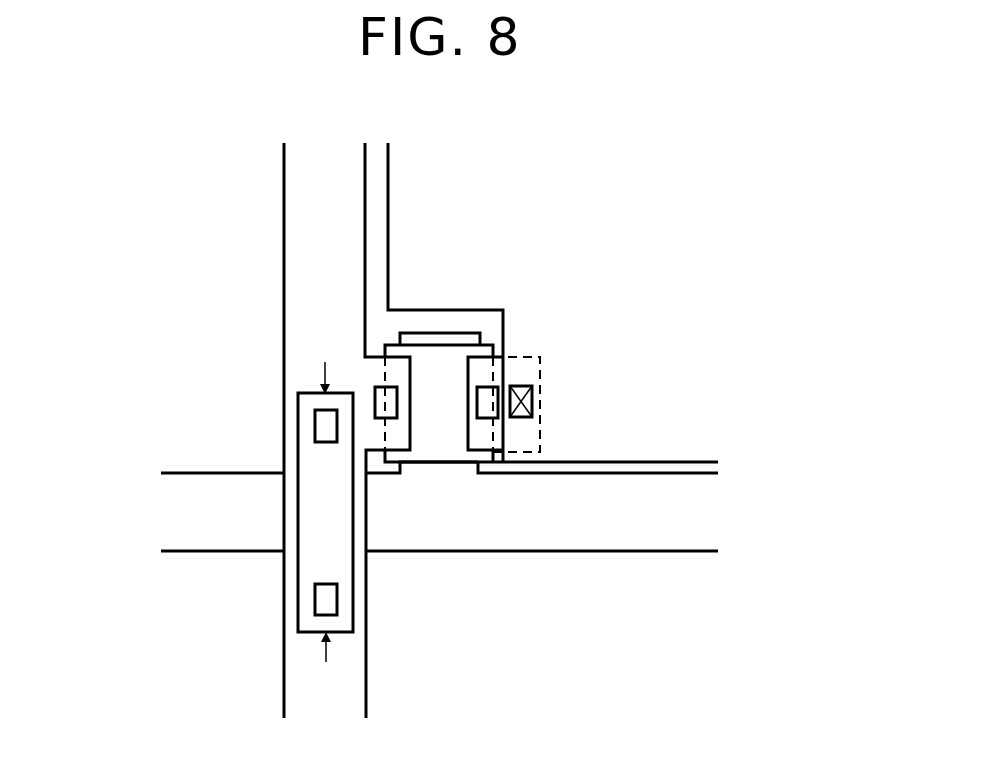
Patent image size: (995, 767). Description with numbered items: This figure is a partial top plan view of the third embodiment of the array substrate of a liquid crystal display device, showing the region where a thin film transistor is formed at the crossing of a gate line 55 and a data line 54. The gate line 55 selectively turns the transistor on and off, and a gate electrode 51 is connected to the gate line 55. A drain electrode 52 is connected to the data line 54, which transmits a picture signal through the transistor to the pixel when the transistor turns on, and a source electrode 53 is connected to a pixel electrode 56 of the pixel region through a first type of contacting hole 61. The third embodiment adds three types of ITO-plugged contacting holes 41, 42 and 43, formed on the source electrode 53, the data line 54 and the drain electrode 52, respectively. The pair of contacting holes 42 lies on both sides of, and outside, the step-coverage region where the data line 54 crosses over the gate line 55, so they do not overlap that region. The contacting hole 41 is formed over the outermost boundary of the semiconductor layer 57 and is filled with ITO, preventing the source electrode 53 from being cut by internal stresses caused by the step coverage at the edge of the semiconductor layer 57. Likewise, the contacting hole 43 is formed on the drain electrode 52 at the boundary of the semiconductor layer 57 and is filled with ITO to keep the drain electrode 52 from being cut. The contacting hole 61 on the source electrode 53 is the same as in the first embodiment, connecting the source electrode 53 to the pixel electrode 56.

The contacting hole 41 is at (488, 408).
The contacting holes 42 is at (315, 427).
The contacting hole 43 is at (375, 392).
The gate electrode 51 is at (450, 338).
The drain electrode 52 is at (373, 370).
The source electrode 53 is at (493, 373).
The data line 54 is at (313, 309).
The gate line 55 is at (510, 533).
The pixel electrode 56 is at (695, 333).
The semiconductor layer 57 is at (443, 427).
The contacting hole 61 is at (532, 412).